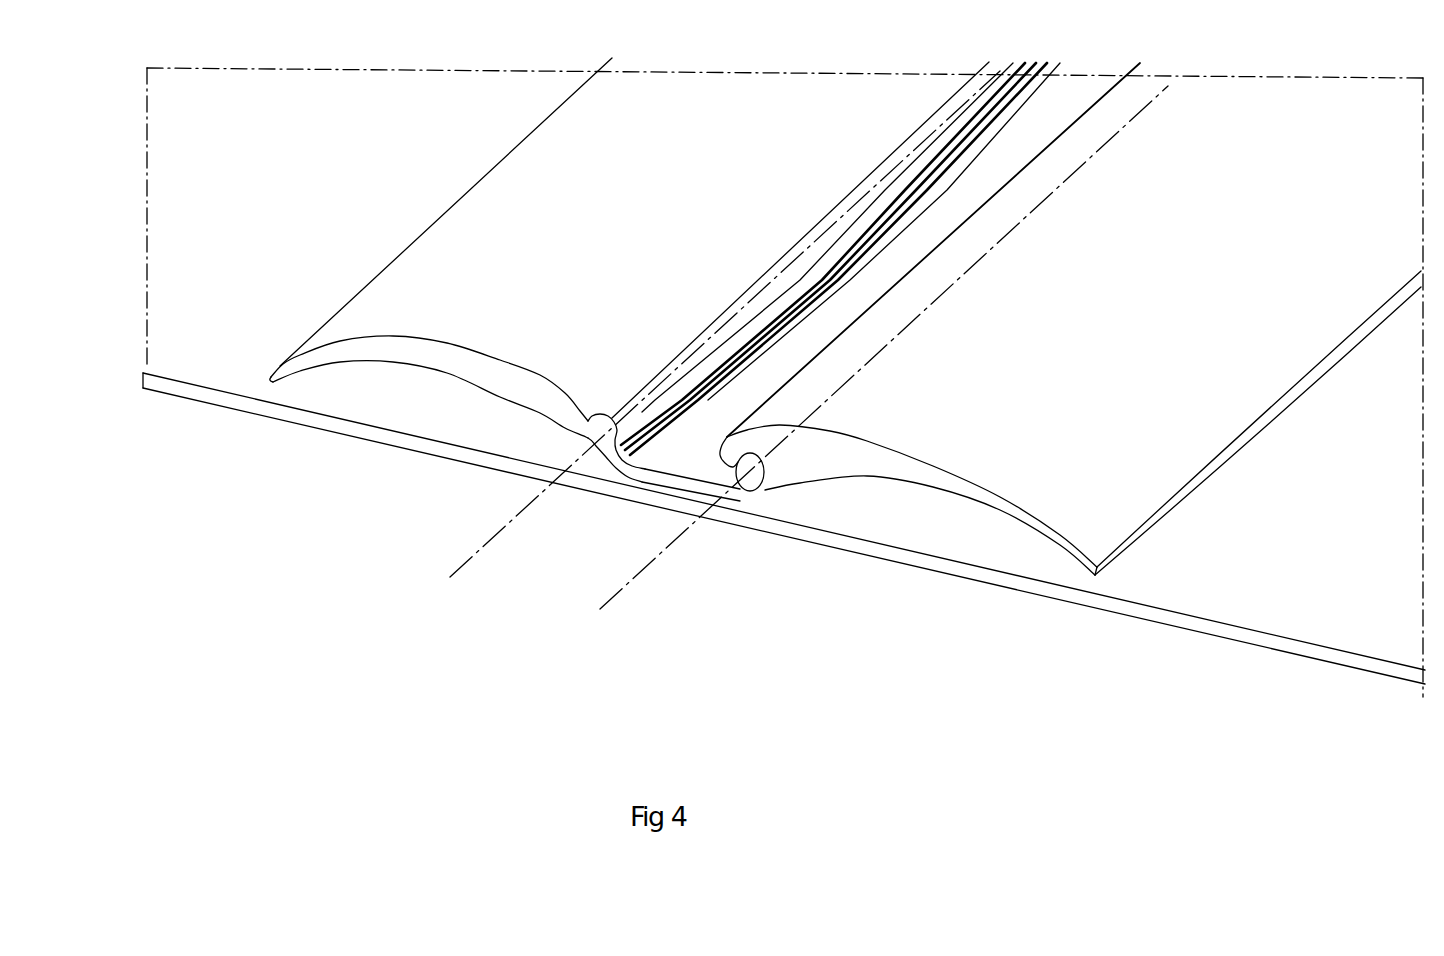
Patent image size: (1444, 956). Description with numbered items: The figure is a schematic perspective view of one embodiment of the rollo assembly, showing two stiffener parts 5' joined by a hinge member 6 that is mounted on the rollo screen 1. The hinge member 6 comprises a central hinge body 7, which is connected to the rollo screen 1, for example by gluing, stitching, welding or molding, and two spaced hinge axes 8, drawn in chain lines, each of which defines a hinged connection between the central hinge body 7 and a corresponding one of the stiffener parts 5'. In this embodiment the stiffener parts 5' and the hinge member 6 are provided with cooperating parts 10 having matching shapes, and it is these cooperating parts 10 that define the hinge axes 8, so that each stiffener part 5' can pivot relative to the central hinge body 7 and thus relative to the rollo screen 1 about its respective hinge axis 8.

The rollo screen 1 is at (227, 380).
The stiffener parts 5' is at (845, 347).
The hinge member 6 is at (1062, 110).
The central hinge body 7 is at (668, 479).
The hinge axes 8 is at (927, 133).
The cooperating parts 10 is at (599, 452).